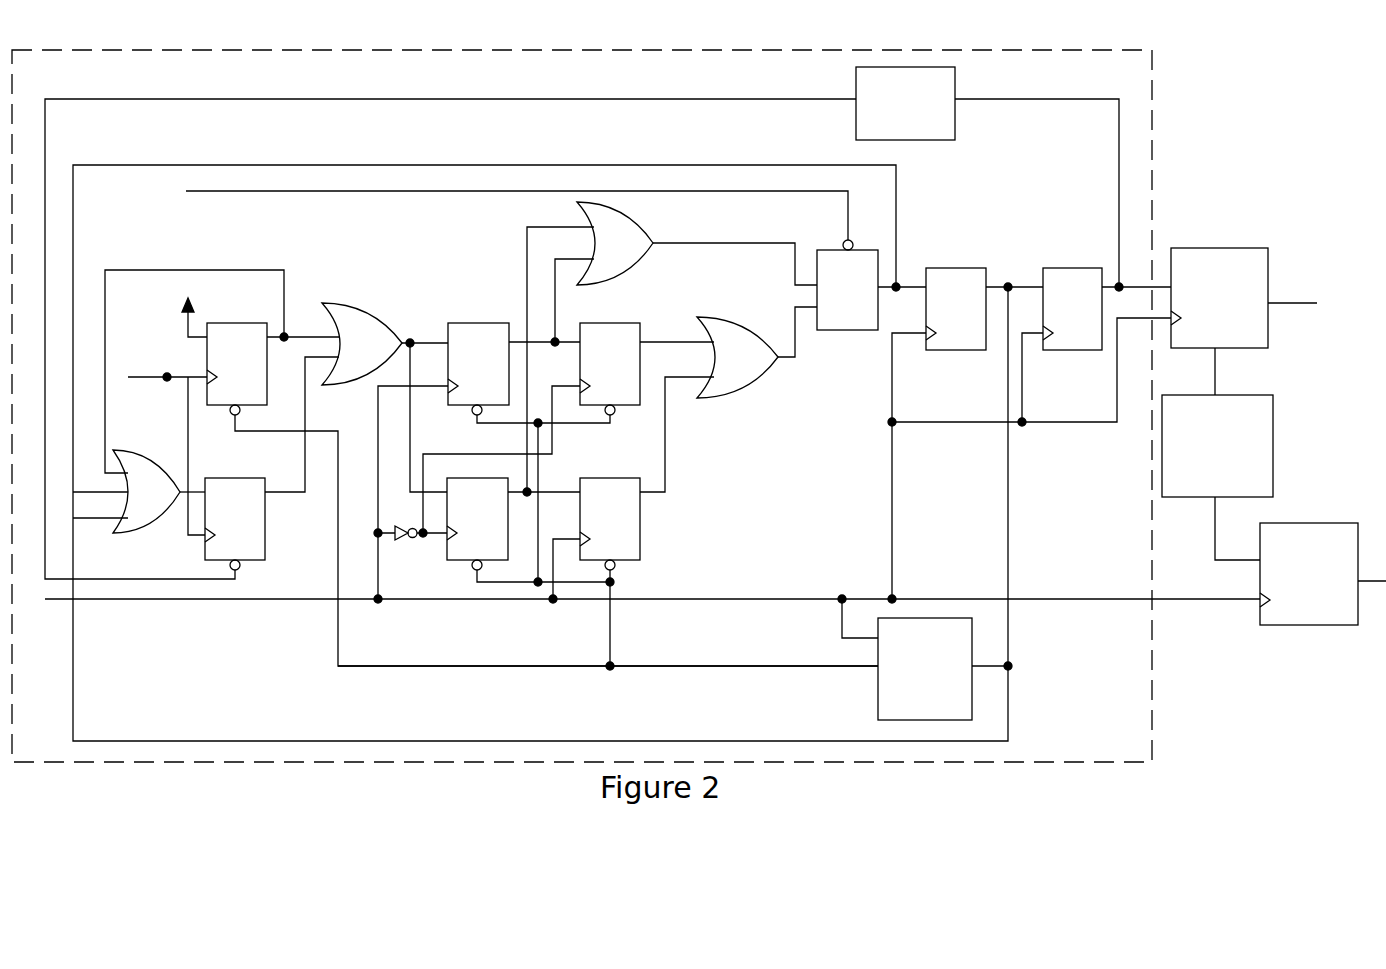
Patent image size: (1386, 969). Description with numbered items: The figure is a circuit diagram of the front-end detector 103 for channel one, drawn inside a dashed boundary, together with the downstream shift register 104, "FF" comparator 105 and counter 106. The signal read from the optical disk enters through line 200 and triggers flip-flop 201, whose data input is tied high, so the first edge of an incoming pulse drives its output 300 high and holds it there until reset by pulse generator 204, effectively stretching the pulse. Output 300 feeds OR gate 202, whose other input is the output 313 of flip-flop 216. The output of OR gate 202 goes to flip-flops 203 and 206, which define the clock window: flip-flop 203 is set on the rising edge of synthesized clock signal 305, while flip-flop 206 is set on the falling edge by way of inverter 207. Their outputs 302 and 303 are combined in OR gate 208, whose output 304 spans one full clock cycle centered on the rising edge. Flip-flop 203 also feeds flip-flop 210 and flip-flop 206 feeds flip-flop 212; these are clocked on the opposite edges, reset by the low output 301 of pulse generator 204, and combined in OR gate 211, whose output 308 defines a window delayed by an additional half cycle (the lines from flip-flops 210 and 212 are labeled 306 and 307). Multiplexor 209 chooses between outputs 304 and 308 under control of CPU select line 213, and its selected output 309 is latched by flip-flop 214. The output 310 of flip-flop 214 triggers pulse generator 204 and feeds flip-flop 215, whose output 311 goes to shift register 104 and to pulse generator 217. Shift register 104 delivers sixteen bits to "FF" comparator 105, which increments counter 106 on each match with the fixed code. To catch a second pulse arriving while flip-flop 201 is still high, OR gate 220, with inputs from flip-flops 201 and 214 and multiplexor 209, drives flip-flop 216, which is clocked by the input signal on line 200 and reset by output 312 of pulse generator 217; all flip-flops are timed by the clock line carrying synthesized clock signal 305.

The front-end detector 103 is at (1152, 163).
The shift register 104 is at (1219, 298).
The "FF" comparator 105 is at (1217, 446).
The counter 106 is at (1309, 574).
The line 200 is at (130, 376).
The flip-flop 201 is at (237, 369).
The OR gate 202 is at (362, 344).
The flip-flop 203 is at (478, 369).
The pulse generator 204 is at (925, 669).
The flip-flop 206 is at (477, 524).
The inverter 207 is at (402, 543).
The OR gate 208 is at (615, 243).
The multiplexor 209 is at (840, 285).
The flip-flop 210 is at (610, 369).
The OR gate 211 is at (737, 357).
The flip-flop 212 is at (610, 524).
The CPU select line 213 is at (362, 192).
The flip-flop 214 is at (956, 309).
The flip-flop 215 is at (1072, 309).
The flip-flop 216 is at (235, 524).
The pulse generator 217 is at (905, 103).
The OR gate 220 is at (146, 491).
The output 300 is at (288, 334).
The output 301 is at (712, 666).
The output 302 is at (537, 343).
The output 303 is at (518, 489).
The output 304 is at (680, 242).
The synthesized clock signal 305 is at (240, 600).
The flip-flop 210 output signal 306 is at (655, 340).
The flip-flop 212 output signal 307 is at (655, 497).
The output 308 is at (780, 360).
The selected output 309 is at (908, 284).
The output 310 is at (992, 284).
The output 311 is at (1119, 285).
The output 312 is at (508, 99).
The output 313 is at (296, 488).